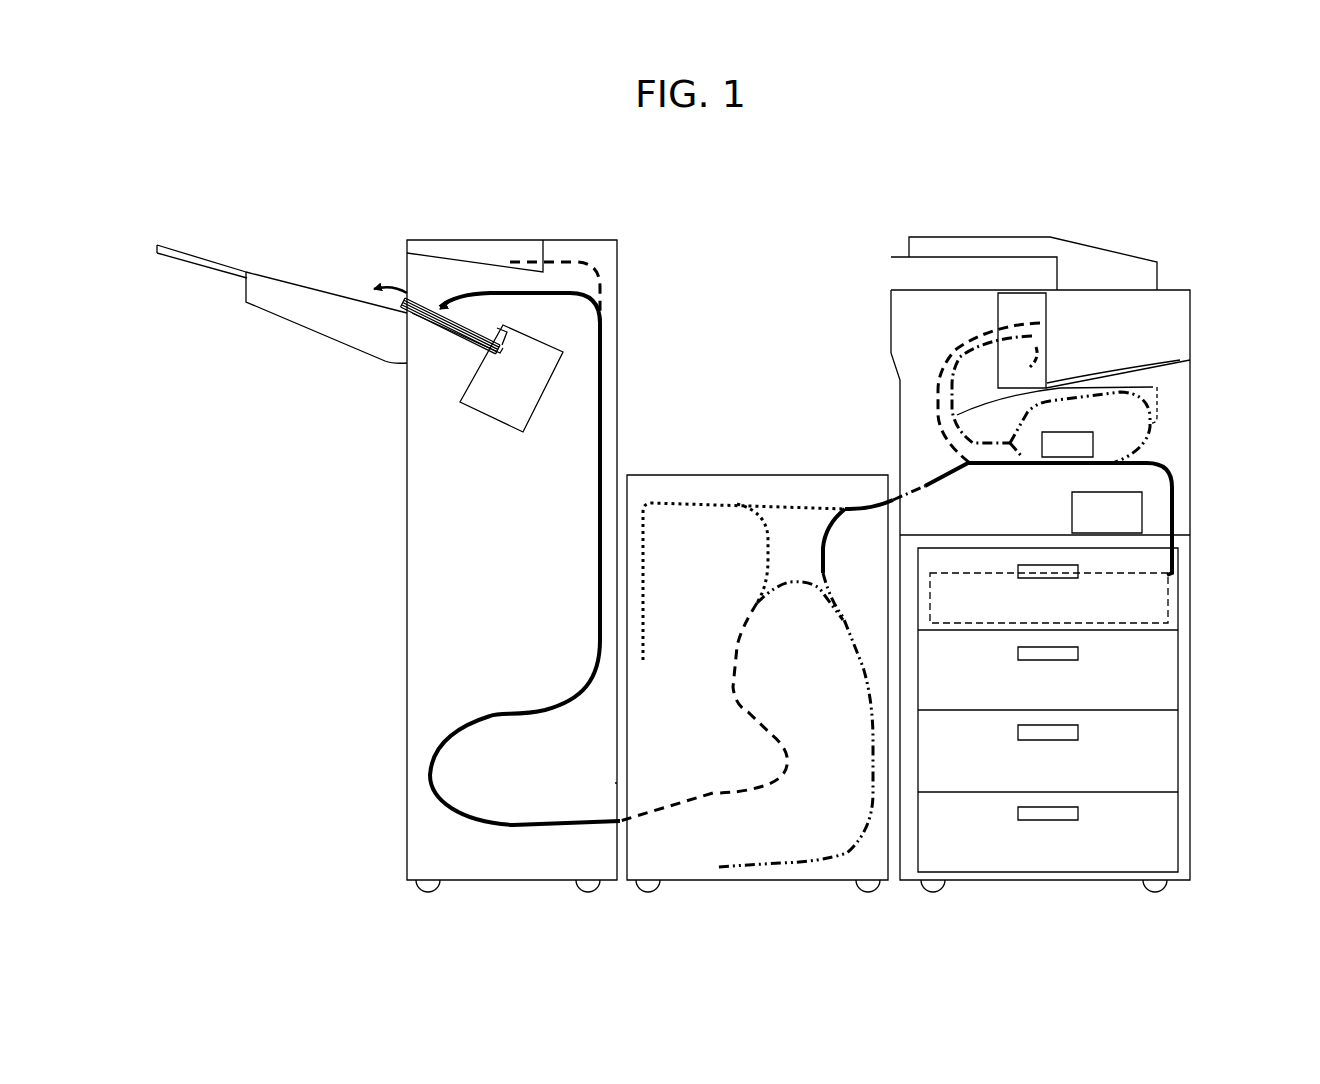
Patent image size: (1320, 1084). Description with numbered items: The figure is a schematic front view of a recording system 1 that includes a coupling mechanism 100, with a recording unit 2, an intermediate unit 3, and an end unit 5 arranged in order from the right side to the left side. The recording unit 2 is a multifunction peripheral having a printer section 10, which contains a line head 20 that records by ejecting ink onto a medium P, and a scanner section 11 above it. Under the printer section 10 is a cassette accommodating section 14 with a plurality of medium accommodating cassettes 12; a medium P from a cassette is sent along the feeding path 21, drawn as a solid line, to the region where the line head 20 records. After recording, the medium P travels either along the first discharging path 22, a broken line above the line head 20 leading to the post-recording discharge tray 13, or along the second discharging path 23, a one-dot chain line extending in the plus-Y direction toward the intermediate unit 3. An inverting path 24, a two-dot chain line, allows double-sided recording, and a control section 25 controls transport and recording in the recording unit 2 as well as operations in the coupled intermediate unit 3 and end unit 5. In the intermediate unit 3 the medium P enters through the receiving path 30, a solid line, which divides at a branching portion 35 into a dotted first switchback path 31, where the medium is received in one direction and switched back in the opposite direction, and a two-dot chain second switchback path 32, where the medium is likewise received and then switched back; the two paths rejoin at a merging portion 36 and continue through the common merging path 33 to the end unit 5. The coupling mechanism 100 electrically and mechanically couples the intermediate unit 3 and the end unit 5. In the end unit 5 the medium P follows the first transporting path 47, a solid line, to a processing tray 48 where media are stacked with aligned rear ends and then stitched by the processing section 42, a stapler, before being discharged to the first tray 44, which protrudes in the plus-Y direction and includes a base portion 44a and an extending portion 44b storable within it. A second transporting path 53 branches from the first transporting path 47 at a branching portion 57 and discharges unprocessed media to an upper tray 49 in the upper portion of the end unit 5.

The recording system 1 is at (786, 226).
The recording unit 2 is at (1036, 591).
The intermediate unit 3 is at (737, 438).
The end unit 5 is at (480, 223).
The printer section 10 is at (1205, 297).
The scanner section 11 is at (1050, 237).
The medium accommodating cassette 12 is at (987, 632).
The post-recording discharge tray 13 is at (1113, 367).
The cassette accommodating section 14 is at (1205, 542).
The line head 20 is at (1070, 431).
The feeding path 21 is at (1178, 505).
The first discharging path 22 is at (985, 327).
The second discharging path 23 is at (933, 484).
The inverting path 24 is at (1072, 411).
The control section 25 is at (1072, 497).
The receiving path 30 is at (872, 502).
The first switchback path 31 is at (680, 500).
The second switchback path 32 is at (863, 695).
The merging path 33 is at (708, 795).
The branching portion 35 is at (850, 512).
The merging portion 36 is at (753, 604).
The processing section 42 is at (478, 412).
The first tray 44 is at (282, 246).
The base portion 44a is at (267, 272).
The extending portion 44b is at (204, 229).
The first transporting path 47 is at (537, 828).
The processing tray 48 is at (434, 335).
The upper tray 49 is at (446, 257).
The second transporting path 53 is at (587, 257).
The branching portion 57 is at (602, 330).
The coupling mechanism 100 is at (612, 783).